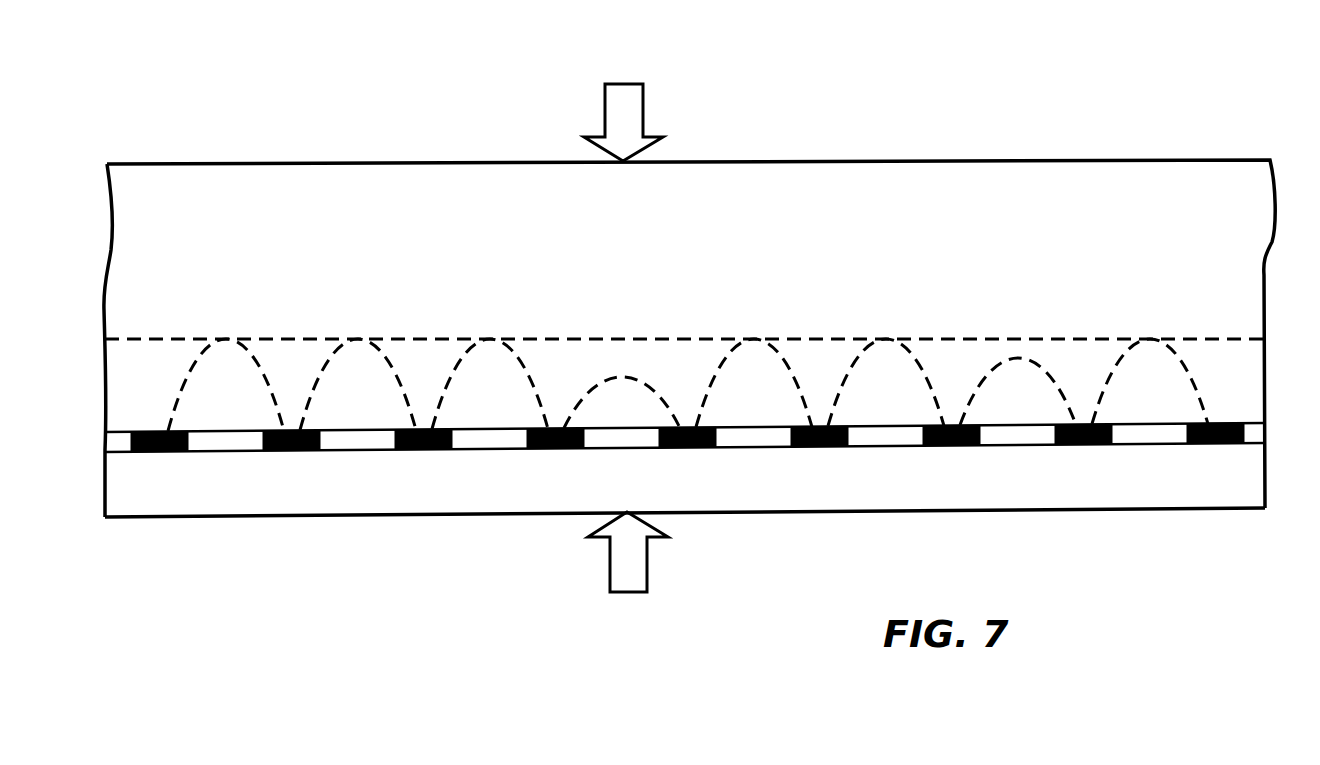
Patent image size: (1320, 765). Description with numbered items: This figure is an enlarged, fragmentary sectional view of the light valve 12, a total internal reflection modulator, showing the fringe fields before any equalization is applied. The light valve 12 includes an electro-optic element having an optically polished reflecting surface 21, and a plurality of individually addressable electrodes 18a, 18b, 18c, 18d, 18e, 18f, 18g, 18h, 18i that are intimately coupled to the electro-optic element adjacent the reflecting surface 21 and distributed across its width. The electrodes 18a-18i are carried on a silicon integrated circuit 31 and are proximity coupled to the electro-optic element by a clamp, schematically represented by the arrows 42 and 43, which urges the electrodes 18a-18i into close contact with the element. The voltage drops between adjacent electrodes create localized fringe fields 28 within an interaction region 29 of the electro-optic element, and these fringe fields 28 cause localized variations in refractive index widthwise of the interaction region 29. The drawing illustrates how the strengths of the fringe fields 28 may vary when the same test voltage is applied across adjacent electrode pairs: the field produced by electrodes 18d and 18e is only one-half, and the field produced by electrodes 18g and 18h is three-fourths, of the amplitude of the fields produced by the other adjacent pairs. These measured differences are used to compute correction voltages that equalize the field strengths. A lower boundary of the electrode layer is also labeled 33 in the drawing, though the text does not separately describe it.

The light valve 12 is at (99, 220).
The individually addressable electrode 18a is at (168, 453).
The individually addressable electrode 18b is at (283, 452).
The individually addressable electrode 18c is at (410, 451).
The individually addressable electrode 18d is at (540, 450).
The individually addressable electrode 18e is at (678, 449).
The individually addressable electrode 18f is at (810, 448).
The individually addressable electrode 18g is at (942, 447).
The individually addressable electrode 18h is at (1082, 446).
The individually addressable electrode 18i is at (1210, 445).
The reflecting surface 21 is at (1250, 421).
The fringe fields 28 is at (455, 363).
The interaction region 29 is at (122, 387).
The silicon integrated circuit 31 is at (240, 502).
The lower surface of electrode layer 33 is at (1252, 450).
The clamp arrow 42 is at (643, 110).
The clamp arrow 43 is at (647, 565).